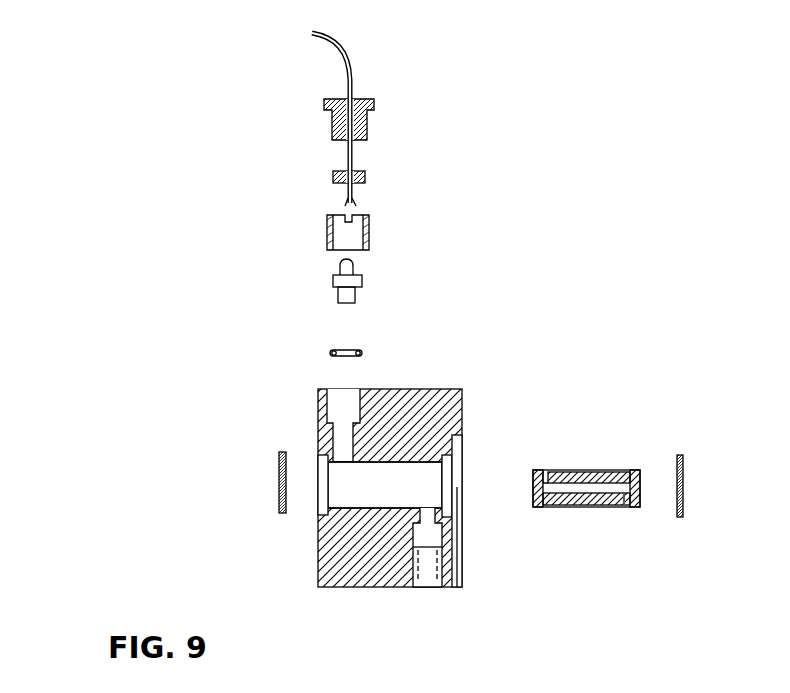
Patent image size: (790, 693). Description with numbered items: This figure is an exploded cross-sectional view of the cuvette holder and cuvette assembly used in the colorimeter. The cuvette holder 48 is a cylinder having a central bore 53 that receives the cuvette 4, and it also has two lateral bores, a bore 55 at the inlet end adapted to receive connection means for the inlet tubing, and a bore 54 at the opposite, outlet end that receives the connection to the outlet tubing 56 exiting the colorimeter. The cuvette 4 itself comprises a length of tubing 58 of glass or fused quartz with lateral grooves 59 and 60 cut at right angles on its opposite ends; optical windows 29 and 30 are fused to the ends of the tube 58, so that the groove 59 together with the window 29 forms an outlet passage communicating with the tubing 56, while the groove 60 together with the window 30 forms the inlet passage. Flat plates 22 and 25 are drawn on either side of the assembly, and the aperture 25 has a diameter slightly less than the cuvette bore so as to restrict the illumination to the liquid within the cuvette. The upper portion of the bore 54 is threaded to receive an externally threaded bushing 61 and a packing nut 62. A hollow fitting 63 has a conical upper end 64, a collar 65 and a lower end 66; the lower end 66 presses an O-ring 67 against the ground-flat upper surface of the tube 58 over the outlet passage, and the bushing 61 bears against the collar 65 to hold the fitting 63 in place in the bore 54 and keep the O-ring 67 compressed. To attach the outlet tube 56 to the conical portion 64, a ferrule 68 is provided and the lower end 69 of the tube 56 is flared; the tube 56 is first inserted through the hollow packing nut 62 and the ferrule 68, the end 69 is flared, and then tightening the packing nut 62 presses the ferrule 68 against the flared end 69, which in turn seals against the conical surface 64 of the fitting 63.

The outlet tubing 56 is at (347, 52).
The packing nut 62 is at (365, 126).
The ferrule 68 is at (333, 176).
The flared lower end 69 is at (355, 205).
The externally threaded bushing 61 is at (327, 222).
The conical upper end 64 is at (353, 260).
The collar 65 is at (333, 280).
The hollow fitting 63 is at (351, 282).
The lower end 66 is at (338, 302).
The O-ring 67 is at (362, 352).
The lateral bore 54 is at (338, 400).
The cuvette holder 48 is at (378, 489).
The bore 53 is at (367, 505).
The lateral bore 55 is at (432, 565).
The plate 22 is at (281, 452).
The aperture 25 is at (683, 455).
The cuvette 4 is at (583, 489).
The optical window 29 is at (533, 492).
The optical window 30 is at (636, 472).
The length of tubing 58 is at (590, 472).
The lateral groove 59 is at (548, 472).
The lateral groove 60 is at (624, 505).